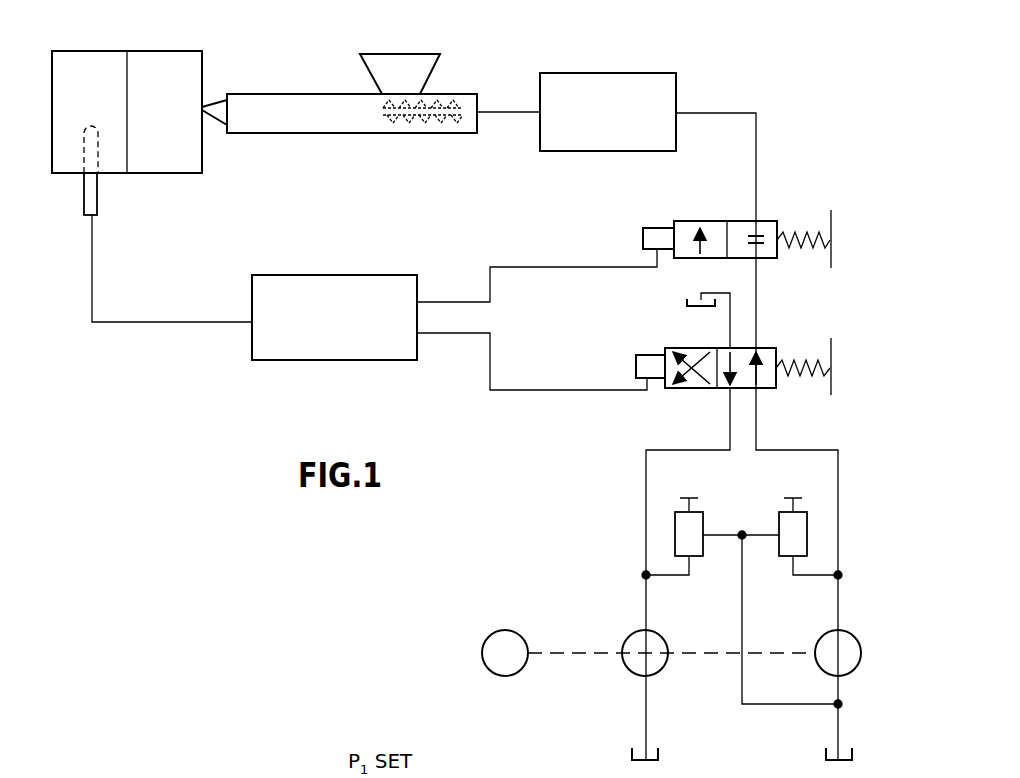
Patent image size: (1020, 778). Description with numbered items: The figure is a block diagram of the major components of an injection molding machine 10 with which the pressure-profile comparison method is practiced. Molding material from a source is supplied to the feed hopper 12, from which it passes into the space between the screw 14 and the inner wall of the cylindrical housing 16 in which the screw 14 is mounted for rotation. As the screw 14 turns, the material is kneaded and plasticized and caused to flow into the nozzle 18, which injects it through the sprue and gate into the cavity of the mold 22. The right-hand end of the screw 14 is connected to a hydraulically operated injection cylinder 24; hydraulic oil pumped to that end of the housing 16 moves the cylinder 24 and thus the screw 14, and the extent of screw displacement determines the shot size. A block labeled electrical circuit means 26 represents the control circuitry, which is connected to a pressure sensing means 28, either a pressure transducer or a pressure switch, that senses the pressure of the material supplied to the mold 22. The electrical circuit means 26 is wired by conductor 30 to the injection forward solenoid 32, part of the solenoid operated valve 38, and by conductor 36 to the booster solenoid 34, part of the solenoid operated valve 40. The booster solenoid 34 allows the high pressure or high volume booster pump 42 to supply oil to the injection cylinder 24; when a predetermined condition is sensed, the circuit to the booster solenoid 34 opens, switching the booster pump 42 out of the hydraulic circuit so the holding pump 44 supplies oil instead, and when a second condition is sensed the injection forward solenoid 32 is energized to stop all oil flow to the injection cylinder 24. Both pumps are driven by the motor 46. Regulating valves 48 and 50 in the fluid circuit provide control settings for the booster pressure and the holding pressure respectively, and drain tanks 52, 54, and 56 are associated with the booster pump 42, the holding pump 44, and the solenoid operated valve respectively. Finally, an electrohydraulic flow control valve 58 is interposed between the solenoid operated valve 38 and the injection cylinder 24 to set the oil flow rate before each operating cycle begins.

The injection molding machine 10 is at (386, 218).
The feed hopper 12 is at (410, 82).
The screw 14 is at (438, 103).
The cylindrical housing 16 is at (280, 94).
The nozzle 18 is at (216, 100).
The mold 22 is at (158, 50).
The injection cylinder 24 is at (462, 120).
The electrical circuit means 26 is at (337, 362).
The pressure sensing means 28 is at (99, 196).
The conductor 30 is at (550, 267).
The injection forward solenoid 32 is at (657, 228).
The booster solenoid 34 is at (652, 355).
The conductor 36 is at (548, 392).
The solenoid operated valve 38 is at (800, 228).
The solenoid operated valve 40 is at (800, 358).
The booster pump 42 is at (627, 674).
The holding pump 44 is at (853, 670).
The motor 46 is at (497, 632).
The regulating valve 48 is at (697, 557).
The regulating valve 50 is at (784, 557).
The drain tank 52 is at (628, 752).
The drain tank 54 is at (824, 752).
The drain tank 56 is at (687, 304).
The flow control valve 58 is at (640, 73).